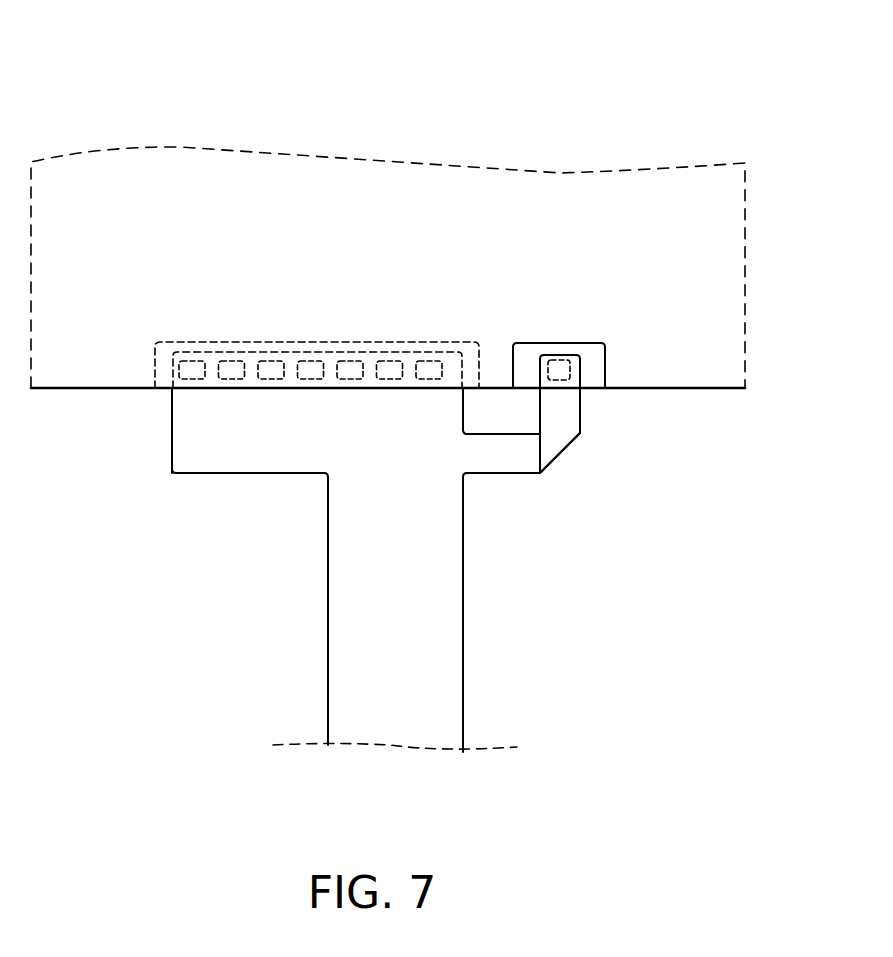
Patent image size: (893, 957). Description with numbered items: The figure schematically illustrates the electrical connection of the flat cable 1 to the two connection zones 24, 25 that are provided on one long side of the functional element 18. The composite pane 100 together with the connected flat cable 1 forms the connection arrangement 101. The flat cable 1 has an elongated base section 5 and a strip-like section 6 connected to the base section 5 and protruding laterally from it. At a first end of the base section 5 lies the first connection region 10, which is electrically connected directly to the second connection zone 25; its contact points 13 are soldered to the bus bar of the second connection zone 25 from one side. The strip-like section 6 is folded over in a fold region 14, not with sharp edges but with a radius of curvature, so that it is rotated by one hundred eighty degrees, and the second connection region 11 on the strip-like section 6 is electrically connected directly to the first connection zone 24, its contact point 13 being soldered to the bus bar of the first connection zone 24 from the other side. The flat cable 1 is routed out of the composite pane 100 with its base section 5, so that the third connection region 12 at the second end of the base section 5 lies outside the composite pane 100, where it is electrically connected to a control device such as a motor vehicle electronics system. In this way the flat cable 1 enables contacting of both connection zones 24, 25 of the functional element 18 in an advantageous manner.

The flat cable 1 is at (334, 590).
The base section 5 is at (168, 442).
The strip-like section 6 is at (580, 417).
The first connection region 10 is at (332, 345).
The second connection region 11 is at (582, 341).
The third connection region 12 is at (436, 733).
The contact points 13 is at (232, 360).
The fold region 14 is at (562, 455).
The functional element 18 is at (372, 222).
The first connection zone 24 is at (615, 356).
The second connection zone 25 is at (148, 358).
The composite pane 100 is at (709, 404).
The connection arrangement 101 is at (157, 127).